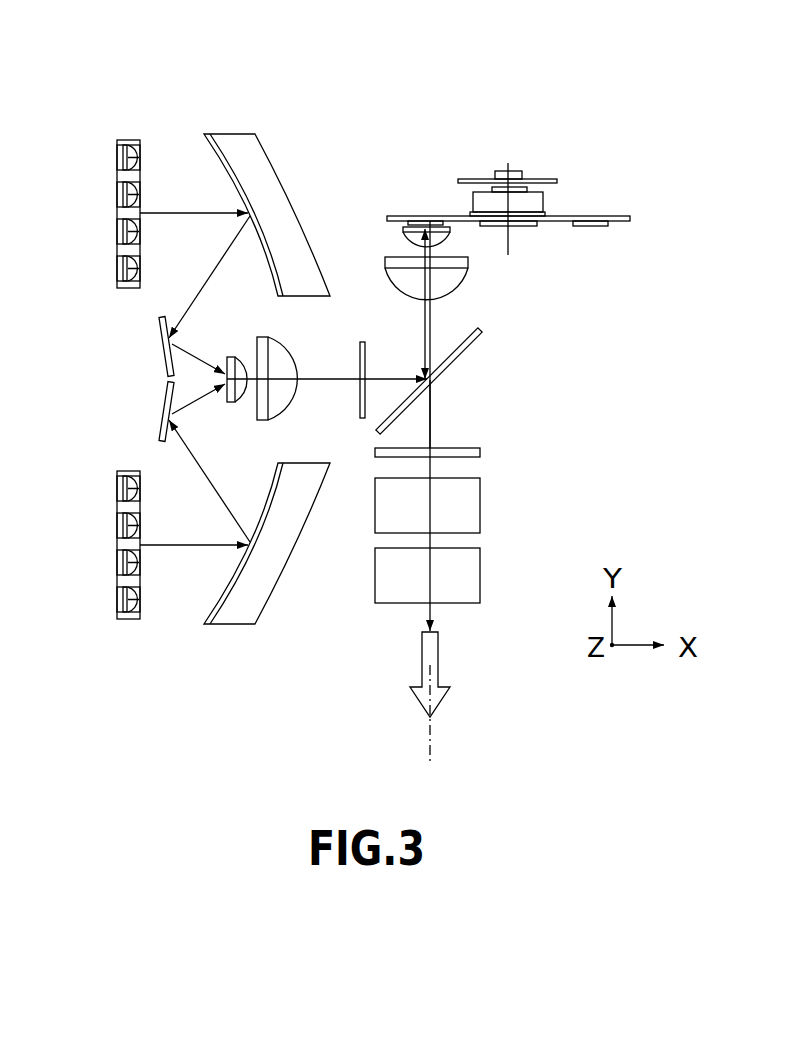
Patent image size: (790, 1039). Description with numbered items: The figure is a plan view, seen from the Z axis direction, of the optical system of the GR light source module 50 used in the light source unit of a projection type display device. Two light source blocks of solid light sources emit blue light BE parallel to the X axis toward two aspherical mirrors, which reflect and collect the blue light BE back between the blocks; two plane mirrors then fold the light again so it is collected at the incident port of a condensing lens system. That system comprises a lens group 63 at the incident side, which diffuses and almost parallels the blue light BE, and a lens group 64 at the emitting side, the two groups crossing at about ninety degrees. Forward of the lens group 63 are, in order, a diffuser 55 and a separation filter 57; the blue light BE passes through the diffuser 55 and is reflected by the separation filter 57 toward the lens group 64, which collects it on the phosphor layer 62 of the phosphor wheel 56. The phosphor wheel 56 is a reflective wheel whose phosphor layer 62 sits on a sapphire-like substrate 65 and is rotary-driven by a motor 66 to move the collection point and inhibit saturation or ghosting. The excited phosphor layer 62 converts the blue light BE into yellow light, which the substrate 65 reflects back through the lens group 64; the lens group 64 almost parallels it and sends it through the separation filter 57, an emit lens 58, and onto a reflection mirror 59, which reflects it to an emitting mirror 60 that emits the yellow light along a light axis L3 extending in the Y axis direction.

The GR light source module 50 is at (344, 76).
The diffuser 55 is at (358, 403).
The phosphor wheel 56 is at (522, 218).
The separation filter 57 is at (463, 356).
The emit lens 58 is at (472, 446).
The reflection mirror 59 is at (470, 507).
The emitting mirror 60 is at (470, 577).
The phosphor layer 62 is at (590, 228).
The lens group at an incident side 63 is at (292, 336).
The lens group at an emitting side 64 is at (475, 277).
The substrate 65 is at (620, 223).
The motor 66 is at (537, 203).
The blue light BE is at (191, 401).
The light axis L3 is at (432, 745).